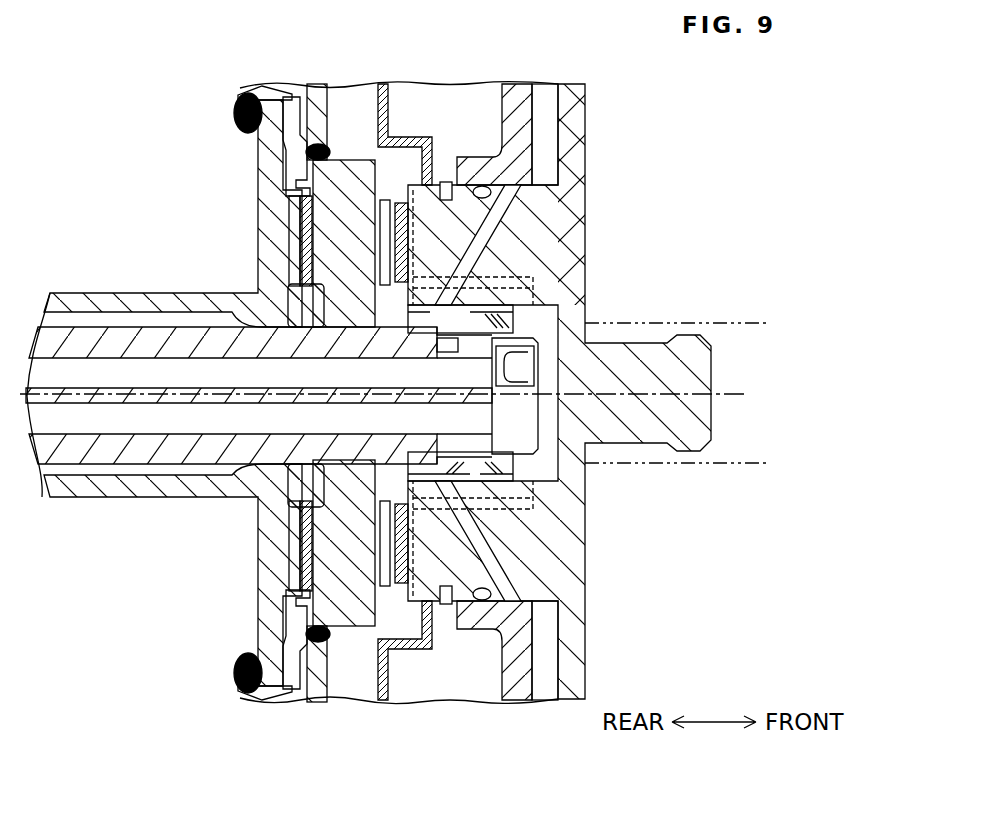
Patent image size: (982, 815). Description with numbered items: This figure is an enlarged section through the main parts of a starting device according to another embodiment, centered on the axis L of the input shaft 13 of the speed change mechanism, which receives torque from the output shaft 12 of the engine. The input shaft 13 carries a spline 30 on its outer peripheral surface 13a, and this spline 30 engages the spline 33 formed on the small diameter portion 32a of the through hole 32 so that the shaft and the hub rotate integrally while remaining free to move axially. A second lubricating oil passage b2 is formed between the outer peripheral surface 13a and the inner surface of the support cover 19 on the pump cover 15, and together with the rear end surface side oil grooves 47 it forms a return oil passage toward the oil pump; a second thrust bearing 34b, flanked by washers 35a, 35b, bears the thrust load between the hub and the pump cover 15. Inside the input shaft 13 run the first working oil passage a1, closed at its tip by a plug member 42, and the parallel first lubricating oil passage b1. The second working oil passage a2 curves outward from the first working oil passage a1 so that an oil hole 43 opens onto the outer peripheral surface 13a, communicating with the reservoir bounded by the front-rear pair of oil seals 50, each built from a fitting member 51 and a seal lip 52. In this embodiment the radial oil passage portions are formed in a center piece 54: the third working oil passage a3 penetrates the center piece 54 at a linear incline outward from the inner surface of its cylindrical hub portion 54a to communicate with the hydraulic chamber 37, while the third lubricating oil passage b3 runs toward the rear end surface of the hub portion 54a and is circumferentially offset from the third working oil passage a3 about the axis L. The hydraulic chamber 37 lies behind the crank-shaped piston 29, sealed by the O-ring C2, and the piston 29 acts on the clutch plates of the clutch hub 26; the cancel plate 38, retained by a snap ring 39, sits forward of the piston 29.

The output shaft 12 is at (690, 323).
The input shaft 13 is at (58, 335).
The outer peripheral surface 13a is at (97, 326).
The pump cover 15 is at (240, 95).
The support cover 19 is at (167, 302).
The clutch hub 26 is at (325, 95).
The piston 29 is at (516, 90).
The spline 30 is at (210, 300).
The through hole 32 is at (200, 490).
The small diameter portion 32a is at (255, 496).
The spline 33 is at (255, 300).
The second thrust bearing 34b is at (306, 245).
The washer 35a is at (372, 188).
The washer 35b is at (292, 240).
The hydraulic chamber 37 is at (544, 99).
The cancel plate 38 is at (382, 90).
The snap ring 39 is at (445, 182).
The plug member 42 is at (528, 370).
The oil hole 43 is at (460, 319).
The oil grooves 47 is at (300, 182).
The oil seal 50 is at (626, 242).
The fitting member 51 is at (548, 275).
The seal lip 52 is at (545, 300).
The center piece 54 is at (632, 532).
The hub portion 54a is at (500, 558).
The first working oil passage a1 is at (168, 384).
The second working oil passage a2 is at (447, 350).
The third working oil passage a3 is at (515, 220).
The first lubricating oil passage b1 is at (168, 432).
The second lubricating oil passage b2 is at (135, 318).
The third lubricating oil passage b3 is at (391, 317).
The O-ring C2 is at (480, 186).
The axis L is at (745, 397).